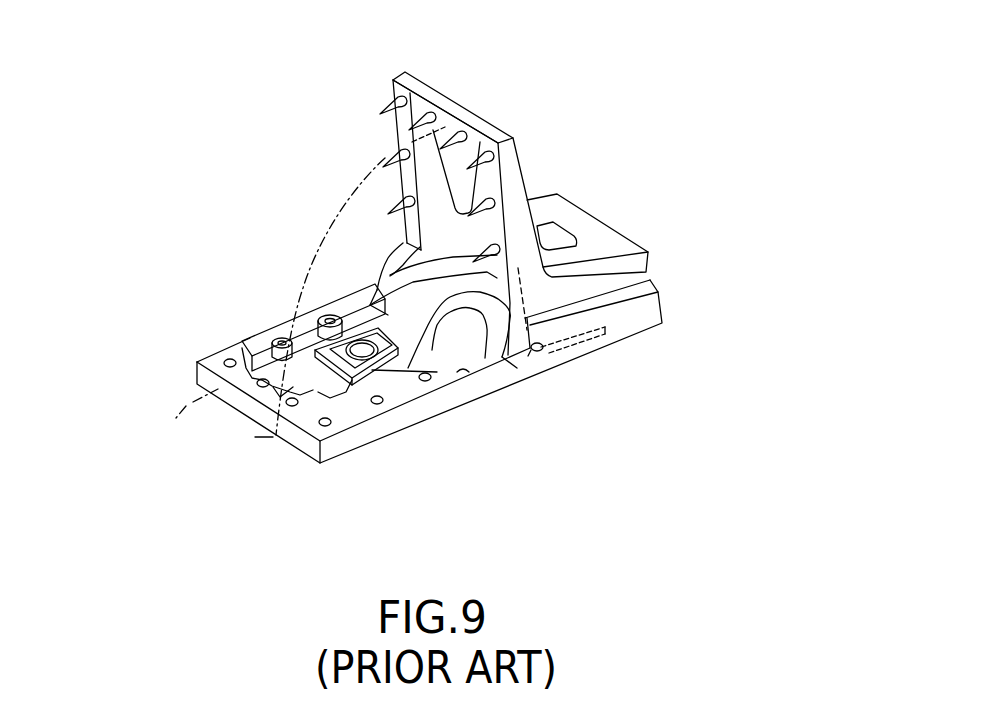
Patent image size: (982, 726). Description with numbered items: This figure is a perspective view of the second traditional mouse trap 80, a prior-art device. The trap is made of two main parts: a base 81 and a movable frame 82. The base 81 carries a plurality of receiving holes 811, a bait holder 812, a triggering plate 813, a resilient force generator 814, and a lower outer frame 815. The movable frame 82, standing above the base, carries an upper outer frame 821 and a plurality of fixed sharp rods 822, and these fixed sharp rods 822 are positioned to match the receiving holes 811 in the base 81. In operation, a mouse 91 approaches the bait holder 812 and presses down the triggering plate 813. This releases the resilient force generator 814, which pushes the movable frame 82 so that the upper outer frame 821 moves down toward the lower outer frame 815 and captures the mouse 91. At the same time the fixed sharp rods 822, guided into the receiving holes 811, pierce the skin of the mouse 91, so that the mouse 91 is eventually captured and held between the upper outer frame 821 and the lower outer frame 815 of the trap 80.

The second traditional mouse trap 80 is at (668, 305).
The base 81 is at (658, 425).
The receiving holes 811 is at (383, 398).
The bait holder 812 is at (430, 372).
The triggering plate 813 is at (333, 380).
The resilient force generator 814 is at (582, 344).
The lower outer frame 815 is at (467, 375).
The movable frame 82 is at (653, 83).
The upper outer frame 821 is at (473, 133).
The fixed sharp rods 822 is at (478, 189).
The mouse 91 is at (186, 406).